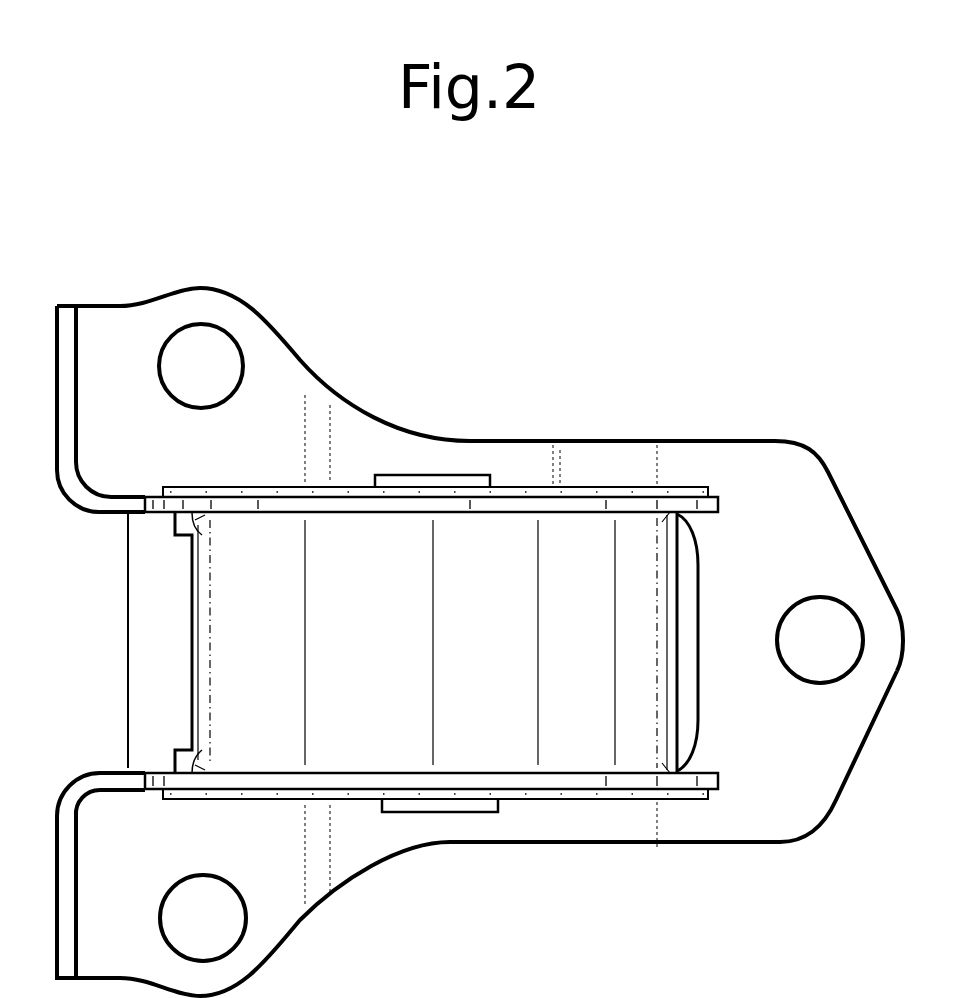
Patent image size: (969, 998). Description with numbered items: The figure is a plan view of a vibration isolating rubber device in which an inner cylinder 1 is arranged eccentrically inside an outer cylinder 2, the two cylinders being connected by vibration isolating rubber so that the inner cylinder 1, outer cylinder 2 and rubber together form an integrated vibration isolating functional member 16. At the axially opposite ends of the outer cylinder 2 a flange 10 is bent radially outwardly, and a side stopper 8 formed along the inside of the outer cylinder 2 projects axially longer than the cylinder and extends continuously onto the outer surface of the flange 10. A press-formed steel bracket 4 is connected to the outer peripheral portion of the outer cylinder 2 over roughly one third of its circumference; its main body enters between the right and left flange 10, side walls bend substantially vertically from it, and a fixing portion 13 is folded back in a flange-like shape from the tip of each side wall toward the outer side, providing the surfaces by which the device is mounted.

The inner cylinder 1 is at (413, 805).
The outer cylinder 2 is at (340, 545).
The bracket 4 is at (205, 266).
The side stopper 8 is at (615, 488).
The flange 10 is at (443, 500).
The fixing portion 13 is at (410, 448).
The vibration isolating functional member 16 is at (507, 482).